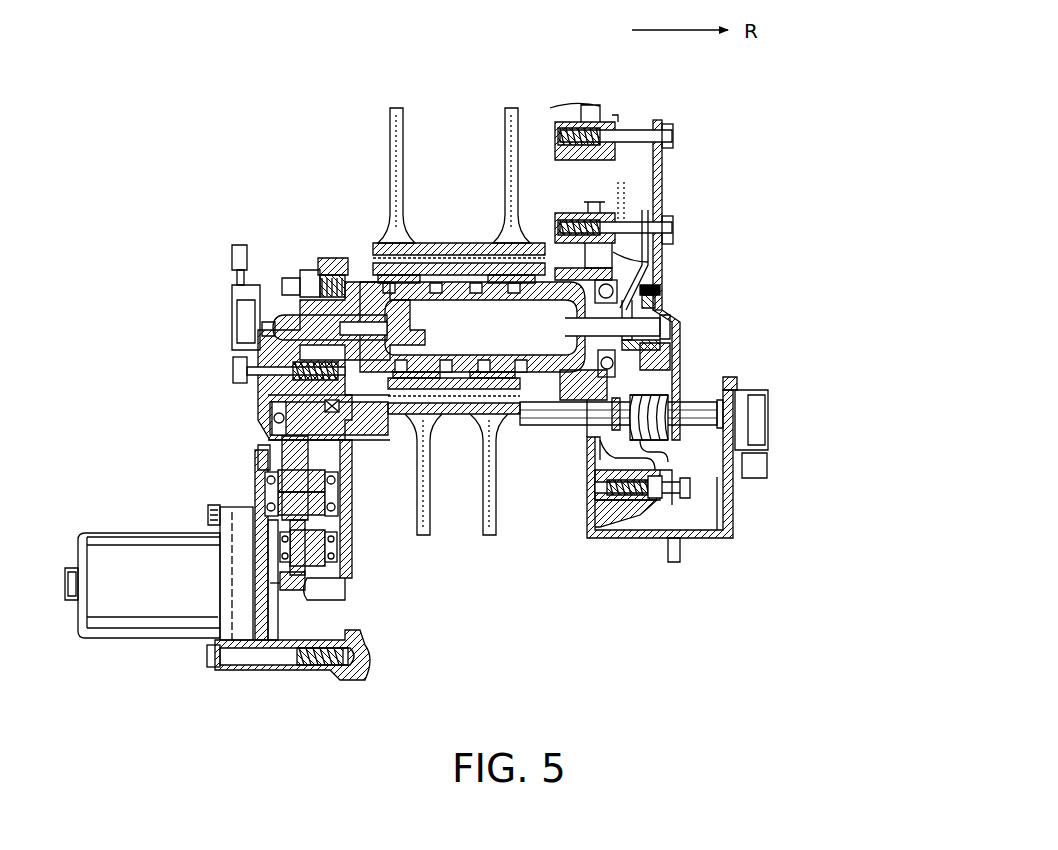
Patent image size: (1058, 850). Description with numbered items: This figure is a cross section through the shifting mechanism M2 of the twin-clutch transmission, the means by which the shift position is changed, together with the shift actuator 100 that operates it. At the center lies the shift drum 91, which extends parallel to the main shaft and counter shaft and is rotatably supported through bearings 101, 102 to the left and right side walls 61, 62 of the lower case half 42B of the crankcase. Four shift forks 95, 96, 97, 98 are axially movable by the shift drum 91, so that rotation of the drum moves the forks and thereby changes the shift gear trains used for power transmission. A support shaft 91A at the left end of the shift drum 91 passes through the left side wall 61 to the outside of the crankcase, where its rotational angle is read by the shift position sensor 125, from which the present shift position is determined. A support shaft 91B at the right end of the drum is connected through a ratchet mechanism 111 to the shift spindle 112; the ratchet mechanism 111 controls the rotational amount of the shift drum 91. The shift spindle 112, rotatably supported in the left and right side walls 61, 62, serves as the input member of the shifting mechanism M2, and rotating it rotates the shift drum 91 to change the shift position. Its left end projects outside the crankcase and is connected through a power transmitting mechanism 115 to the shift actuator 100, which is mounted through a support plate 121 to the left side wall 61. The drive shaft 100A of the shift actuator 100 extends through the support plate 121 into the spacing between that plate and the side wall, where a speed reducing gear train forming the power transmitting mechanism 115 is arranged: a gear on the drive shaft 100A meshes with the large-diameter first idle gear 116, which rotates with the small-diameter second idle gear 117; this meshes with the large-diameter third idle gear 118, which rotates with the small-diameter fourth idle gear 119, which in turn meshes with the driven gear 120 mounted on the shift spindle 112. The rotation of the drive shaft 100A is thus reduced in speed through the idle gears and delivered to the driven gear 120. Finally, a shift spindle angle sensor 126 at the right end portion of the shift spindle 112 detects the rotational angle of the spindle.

The shift fork 97 is at (399, 130).
The shift fork 98 is at (510, 130).
The shift drum 91 is at (455, 285).
The support shaft 91A is at (395, 331).
The support shaft 91B is at (577, 324).
The lower case half 42B is at (312, 262).
The left side wall 61 is at (338, 268).
The bearing 101 is at (353, 300).
The shift position sensor 125 is at (245, 298).
The right side wall 62 is at (613, 252).
The bearing 102 is at (625, 272).
The ratchet mechanism 111 is at (672, 289).
The shift spindle 112 is at (268, 410).
The power transmitting mechanism 115 is at (248, 482).
The shift actuator 100 is at (118, 522).
The drive shaft 100A is at (295, 588).
The driven gear 120 is at (330, 469).
The fourth idle gear 119 is at (325, 498).
The third idle gear 118 is at (325, 520).
The second idle gear 117 is at (318, 557).
The first idle gear 116 is at (308, 590).
The shift fork 95 is at (432, 530).
The shift fork 96 is at (498, 530).
The shifting mechanism M2 is at (556, 518).
The shift spindle angle sensor 126 is at (762, 406).
The support plate 121 is at (279, 672).